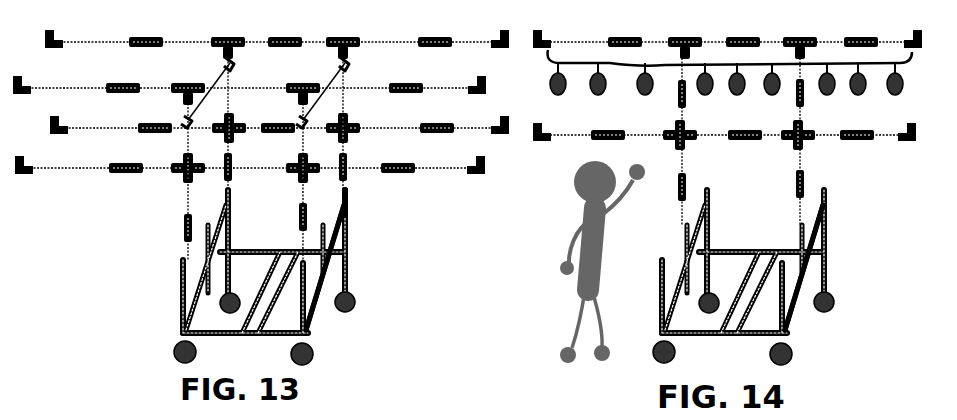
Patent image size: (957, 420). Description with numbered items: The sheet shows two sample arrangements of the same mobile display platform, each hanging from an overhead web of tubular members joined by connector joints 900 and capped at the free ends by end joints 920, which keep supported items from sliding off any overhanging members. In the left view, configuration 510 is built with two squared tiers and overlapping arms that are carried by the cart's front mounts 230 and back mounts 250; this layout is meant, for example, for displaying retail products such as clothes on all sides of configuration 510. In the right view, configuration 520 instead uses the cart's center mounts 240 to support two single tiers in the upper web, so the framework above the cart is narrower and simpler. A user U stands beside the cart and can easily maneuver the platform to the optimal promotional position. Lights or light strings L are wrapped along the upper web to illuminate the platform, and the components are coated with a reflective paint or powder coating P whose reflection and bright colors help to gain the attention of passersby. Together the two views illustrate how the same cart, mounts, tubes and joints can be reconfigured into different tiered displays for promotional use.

In FIG. 13, the end joint 920 is at (28, 178).
In FIG. 13, the connector joint 900 is at (122, 178).
In FIG. 13, the configuration 510 is at (226, 211).
In FIG. 13, the back mount 250 is at (350, 195).
In FIG. 13, the front mount 230 is at (333, 275).
In FIG. 14, the reflective paint or powder coating P is at (862, 38).
In FIG. 14, the light string L is at (556, 95).
In FIG. 14, the configuration 520 is at (667, 211).
In FIG. 14, the user U is at (545, 245).
In FIG. 14, the center mount 240 is at (822, 242).